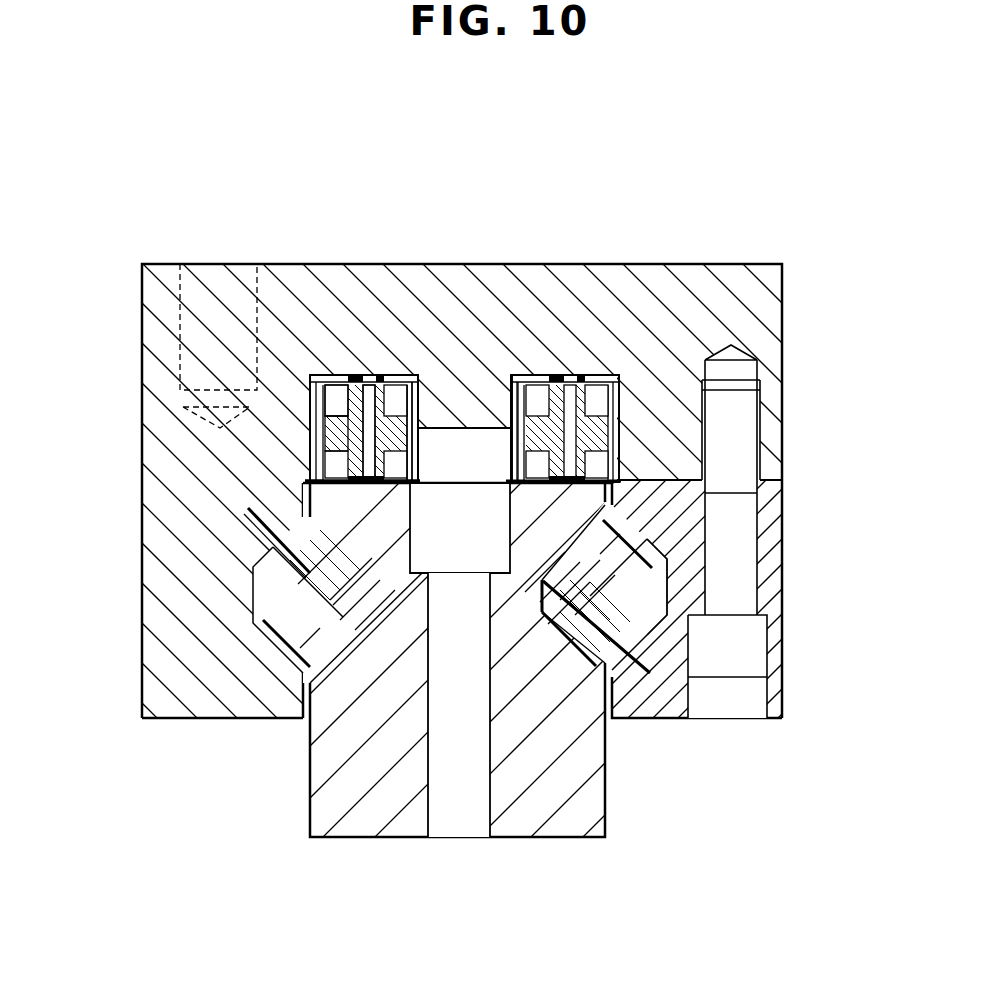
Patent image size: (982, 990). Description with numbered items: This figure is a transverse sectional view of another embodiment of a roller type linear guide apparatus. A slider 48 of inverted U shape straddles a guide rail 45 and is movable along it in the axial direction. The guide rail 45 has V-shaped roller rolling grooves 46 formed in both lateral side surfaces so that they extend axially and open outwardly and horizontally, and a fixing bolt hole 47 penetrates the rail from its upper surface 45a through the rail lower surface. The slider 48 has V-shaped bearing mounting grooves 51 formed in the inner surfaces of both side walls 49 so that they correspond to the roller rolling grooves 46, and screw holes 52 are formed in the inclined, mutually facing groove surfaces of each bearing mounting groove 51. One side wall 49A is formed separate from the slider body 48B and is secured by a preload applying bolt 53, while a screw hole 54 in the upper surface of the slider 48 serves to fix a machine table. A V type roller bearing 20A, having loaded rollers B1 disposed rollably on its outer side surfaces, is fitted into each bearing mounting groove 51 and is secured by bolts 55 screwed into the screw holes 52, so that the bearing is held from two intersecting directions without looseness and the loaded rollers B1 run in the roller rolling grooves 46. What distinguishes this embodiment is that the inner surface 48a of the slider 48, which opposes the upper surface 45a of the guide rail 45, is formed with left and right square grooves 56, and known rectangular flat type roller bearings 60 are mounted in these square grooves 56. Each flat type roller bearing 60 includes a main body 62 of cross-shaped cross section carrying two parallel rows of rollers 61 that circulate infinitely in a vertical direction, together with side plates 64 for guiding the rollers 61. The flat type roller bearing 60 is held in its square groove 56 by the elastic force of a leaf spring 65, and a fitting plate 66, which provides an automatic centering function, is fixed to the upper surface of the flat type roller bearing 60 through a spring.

The slider 48 is at (743, 280).
The slider body 48B is at (676, 293).
The inner surface of the slider 48a is at (438, 440).
The guide rail 45 is at (308, 818).
The upper surface of the guide rail 45a is at (437, 495).
The V-shaped roller rolling groove 46 is at (340, 635).
The fixing bolt hole 47 is at (430, 818).
The side wall 49 is at (187, 695).
The side wall 49A is at (655, 712).
The V-shaped bearing mounting groove 51 is at (660, 600).
The screw hole 52 is at (652, 675).
The preload applying bolt 53 is at (763, 423).
The screw hole 54 is at (190, 292).
The bolt 55 is at (568, 636).
The square groove 56 is at (410, 372).
The flat type roller bearing 60 is at (333, 370).
The roller 61 is at (333, 397).
The main body 62 is at (337, 435).
The side plate 64 is at (312, 462).
The leaf spring 65 is at (420, 400).
The fitting plate 66 is at (360, 390).
The V type roller bearing 20A is at (264, 588).
The loaded roller B1 is at (302, 665).